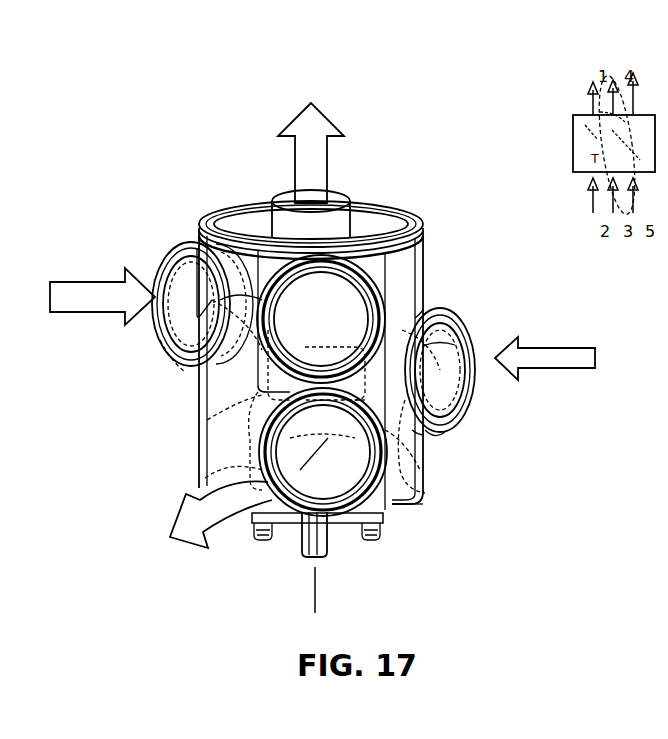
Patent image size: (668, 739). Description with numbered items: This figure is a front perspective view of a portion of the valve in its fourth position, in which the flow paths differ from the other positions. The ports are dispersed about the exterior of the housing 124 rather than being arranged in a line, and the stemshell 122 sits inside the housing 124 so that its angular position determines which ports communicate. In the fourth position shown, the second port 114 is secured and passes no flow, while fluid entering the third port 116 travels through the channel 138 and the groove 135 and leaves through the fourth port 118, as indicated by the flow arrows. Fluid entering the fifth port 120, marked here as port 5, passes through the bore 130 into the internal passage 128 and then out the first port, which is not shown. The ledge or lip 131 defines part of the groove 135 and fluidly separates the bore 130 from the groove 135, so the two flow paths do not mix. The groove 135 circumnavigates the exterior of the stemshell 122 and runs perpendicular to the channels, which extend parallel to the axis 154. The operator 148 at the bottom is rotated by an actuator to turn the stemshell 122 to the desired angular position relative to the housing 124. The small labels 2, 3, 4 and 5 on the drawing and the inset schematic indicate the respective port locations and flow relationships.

The second port 114 is at (385, 340).
The stemshell 122 is at (410, 208).
The internal passage 128 is at (340, 190).
The third port 116 is at (167, 353).
The fifth port 120 is at (470, 397).
The bore 130 is at (420, 353).
The ledge 131 is at (432, 432).
The housing 124 is at (433, 485).
The channel 138 is at (240, 407).
The groove 135 is at (200, 476).
The fourth port 118 is at (219, 528).
The operator 148 is at (332, 540).
The axis 154 is at (312, 592).
The port 2 is at (327, 317).
The port 3 is at (256, 368).
The port 4 is at (331, 452).
The port 5 is at (358, 388).